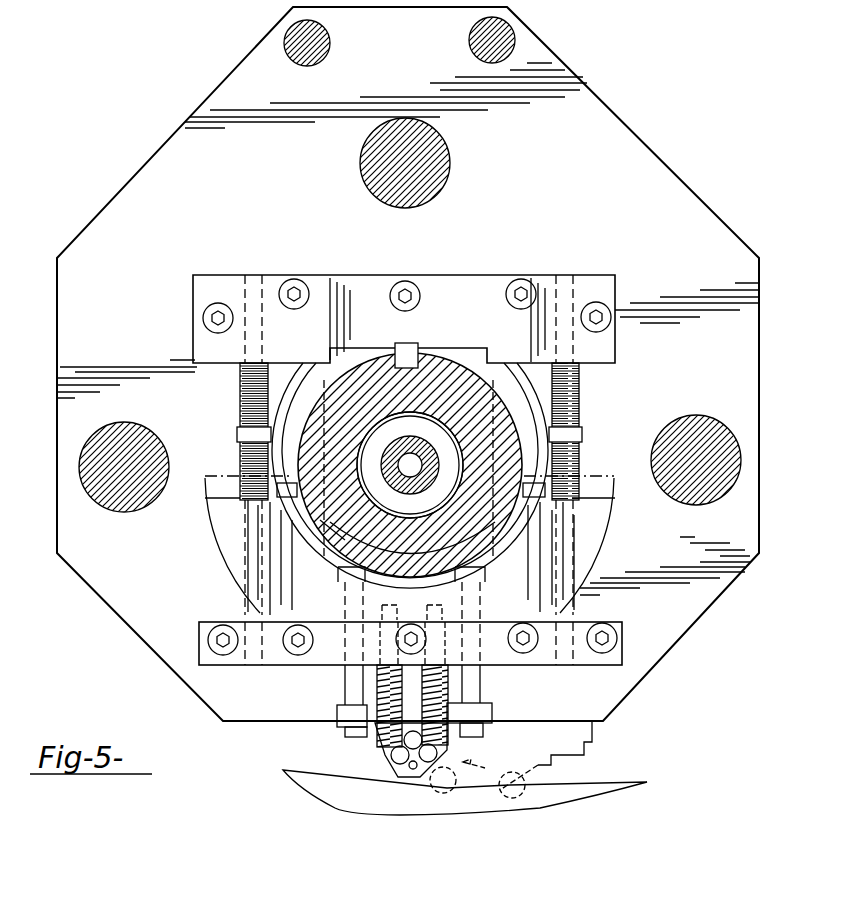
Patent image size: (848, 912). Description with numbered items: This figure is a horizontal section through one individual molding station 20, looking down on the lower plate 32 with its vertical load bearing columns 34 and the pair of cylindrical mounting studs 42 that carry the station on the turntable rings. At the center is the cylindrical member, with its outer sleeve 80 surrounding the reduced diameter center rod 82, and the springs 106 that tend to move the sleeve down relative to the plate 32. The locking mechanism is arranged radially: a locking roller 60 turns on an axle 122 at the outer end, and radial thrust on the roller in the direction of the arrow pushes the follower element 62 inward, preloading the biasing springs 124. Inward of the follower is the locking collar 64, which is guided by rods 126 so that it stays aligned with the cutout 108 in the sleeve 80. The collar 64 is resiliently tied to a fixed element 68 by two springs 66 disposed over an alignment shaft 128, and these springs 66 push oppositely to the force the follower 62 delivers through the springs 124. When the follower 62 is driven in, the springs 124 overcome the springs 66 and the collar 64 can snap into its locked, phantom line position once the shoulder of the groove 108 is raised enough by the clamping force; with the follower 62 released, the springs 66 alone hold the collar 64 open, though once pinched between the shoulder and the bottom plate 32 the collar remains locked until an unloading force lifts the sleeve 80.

The molding station 20 is at (708, 633).
The lower plate 32 is at (546, 173).
The vertical load bearing columns 34 is at (370, 152).
The cylindrical mounting studs 42 is at (318, 32).
The locking roller 60 is at (465, 769).
The locking actuator 62 is at (342, 720).
The locking collar 64 is at (513, 591).
The springs 66 is at (583, 466).
The fixed element 68 is at (481, 315).
The outer sleeve 80 is at (442, 366).
The center rod 82 is at (418, 488).
The springs 106 is at (432, 439).
The cutout 108 is at (335, 525).
The axle 122 is at (458, 757).
The springs 124 is at (482, 696).
The guide rods 126 is at (350, 686).
The alignment shaft 128 is at (240, 392).